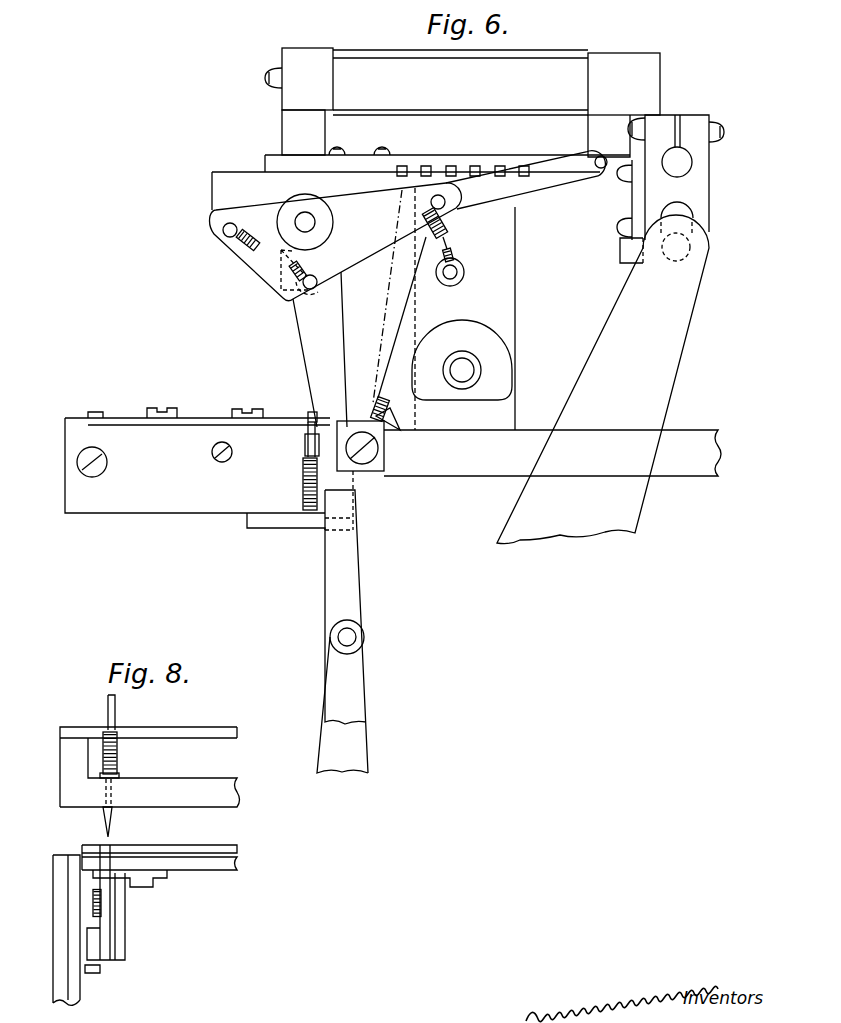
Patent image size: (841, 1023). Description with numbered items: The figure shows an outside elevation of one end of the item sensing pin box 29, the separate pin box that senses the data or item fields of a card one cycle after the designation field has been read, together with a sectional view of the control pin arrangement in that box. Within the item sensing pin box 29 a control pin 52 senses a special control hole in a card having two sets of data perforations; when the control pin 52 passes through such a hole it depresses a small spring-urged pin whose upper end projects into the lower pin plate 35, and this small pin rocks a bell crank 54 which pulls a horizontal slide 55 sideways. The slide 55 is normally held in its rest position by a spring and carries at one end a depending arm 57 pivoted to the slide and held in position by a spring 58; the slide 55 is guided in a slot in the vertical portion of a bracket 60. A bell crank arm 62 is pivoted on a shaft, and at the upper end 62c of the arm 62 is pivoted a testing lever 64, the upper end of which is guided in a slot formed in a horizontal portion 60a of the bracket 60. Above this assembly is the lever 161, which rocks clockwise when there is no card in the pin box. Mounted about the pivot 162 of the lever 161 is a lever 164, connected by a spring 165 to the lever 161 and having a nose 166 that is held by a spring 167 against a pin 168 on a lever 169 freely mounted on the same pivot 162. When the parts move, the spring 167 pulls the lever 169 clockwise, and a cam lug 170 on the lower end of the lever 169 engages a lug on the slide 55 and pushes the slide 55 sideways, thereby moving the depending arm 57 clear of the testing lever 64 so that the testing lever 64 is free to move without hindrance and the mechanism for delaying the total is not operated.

In FIG. 6, the item sensing pin box 29 is at (462, 102).
In FIG. 8, the item sensing pin box 29 is at (150, 767).
In FIG. 6, the lever 161 is at (569, 177).
In FIG. 6, the lever 164 is at (353, 203).
In FIG. 6, the pivot 162 is at (240, 244).
In FIG. 6, the spring 167 is at (296, 222).
In FIG. 6, the nose 166 is at (281, 290).
In FIG. 6, the pin 168 is at (318, 284).
In FIG. 6, the lever 169 is at (327, 345).
In FIG. 6, the spring 165 is at (452, 242).
In FIG. 6, the cam lug 170 is at (398, 421).
In FIG. 6, the depending arm 57 is at (308, 413).
In FIG. 6, the horizontal slide 55 is at (305, 440).
In FIG. 8, the horizontal slide 55 is at (97, 903).
In FIG. 6, the spring 58 is at (302, 489).
In FIG. 6, the bracket 60 is at (217, 507).
In FIG. 6, the horizontal portion of the bracket 60a is at (293, 523).
In FIG. 6, the testing lever 64 is at (350, 570).
In FIG. 6, the upper end of the arm 62c is at (338, 640).
In FIG. 6, the bell crank arm 62 is at (340, 745).
In FIG. 8, the control pin 52 is at (107, 703).
In FIG. 8, the lower pin plate 35 is at (212, 862).
In FIG. 8, the bell crank 54 is at (103, 912).